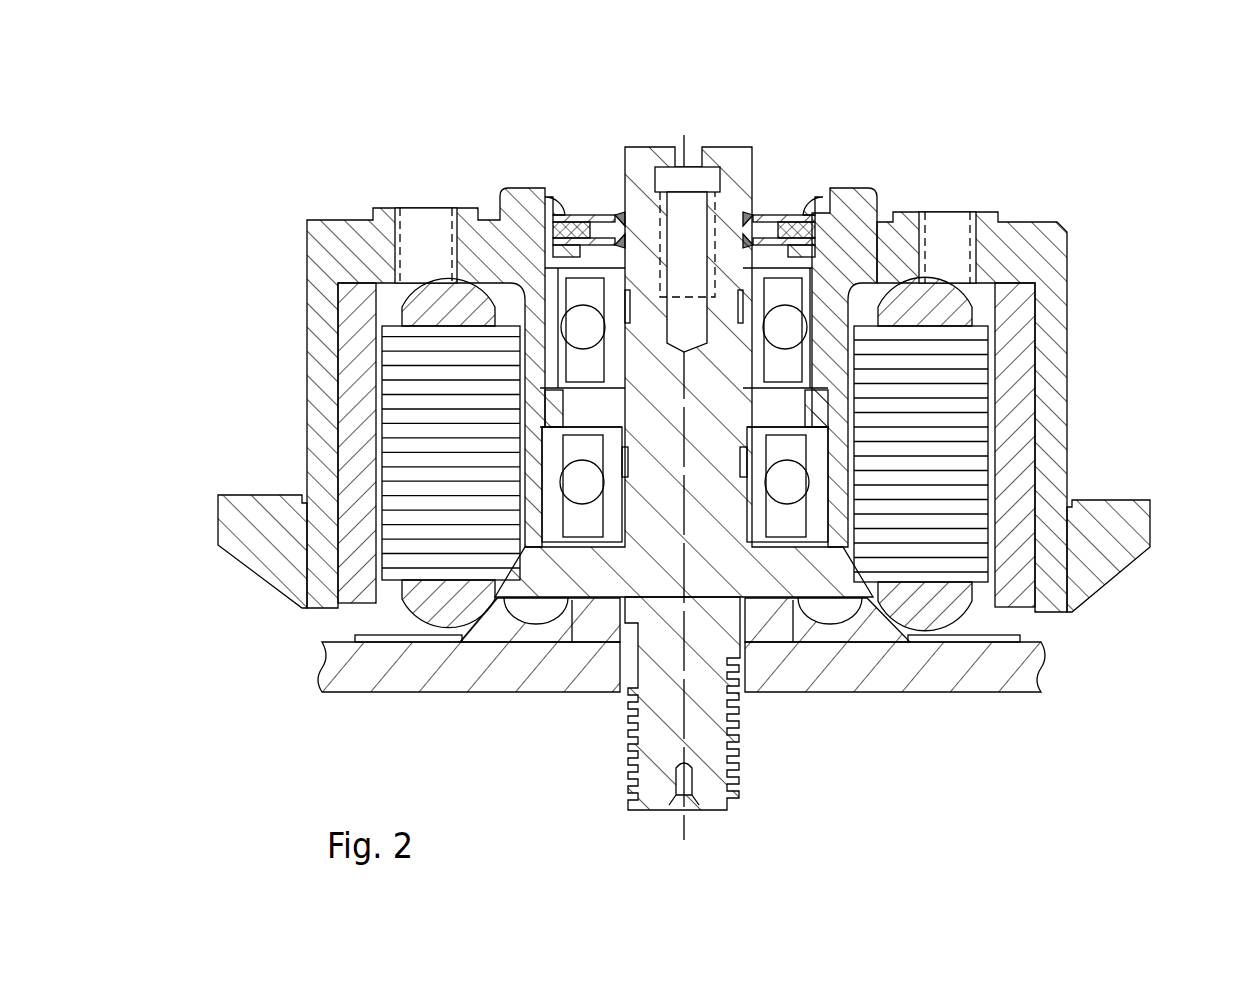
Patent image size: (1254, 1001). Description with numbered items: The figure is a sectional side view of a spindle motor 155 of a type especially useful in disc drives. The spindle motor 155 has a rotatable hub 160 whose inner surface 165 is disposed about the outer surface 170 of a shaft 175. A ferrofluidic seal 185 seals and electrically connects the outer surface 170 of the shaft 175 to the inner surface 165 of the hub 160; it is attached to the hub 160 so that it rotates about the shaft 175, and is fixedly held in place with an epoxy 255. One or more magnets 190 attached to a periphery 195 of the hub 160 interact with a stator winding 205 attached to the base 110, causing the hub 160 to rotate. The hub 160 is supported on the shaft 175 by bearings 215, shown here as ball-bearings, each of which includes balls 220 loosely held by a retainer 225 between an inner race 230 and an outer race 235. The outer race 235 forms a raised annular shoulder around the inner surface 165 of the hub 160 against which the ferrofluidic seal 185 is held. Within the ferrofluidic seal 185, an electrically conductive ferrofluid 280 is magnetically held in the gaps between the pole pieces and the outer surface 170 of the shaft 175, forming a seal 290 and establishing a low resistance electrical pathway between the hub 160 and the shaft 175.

The base 110 is at (830, 695).
The spindle motor 155 is at (1154, 186).
The rotatable hub 160 is at (873, 184).
The inner surface 165 is at (830, 396).
The outer surface 170 is at (690, 350).
The shaft 175 is at (723, 150).
The ferrofluidic seal 185 is at (797, 182).
The magnets 190 is at (1036, 420).
The periphery 195 is at (1047, 476).
The stator winding 205 is at (972, 368).
The bearings 215 is at (597, 423).
The balls 220 is at (792, 323).
The retainer 225 is at (790, 293).
The inner race 230 is at (623, 477).
The outer race 235 is at (988, 470).
The epoxy 255 is at (563, 184).
The ferrofluid 280 is at (617, 213).
The seal 290 is at (762, 195).